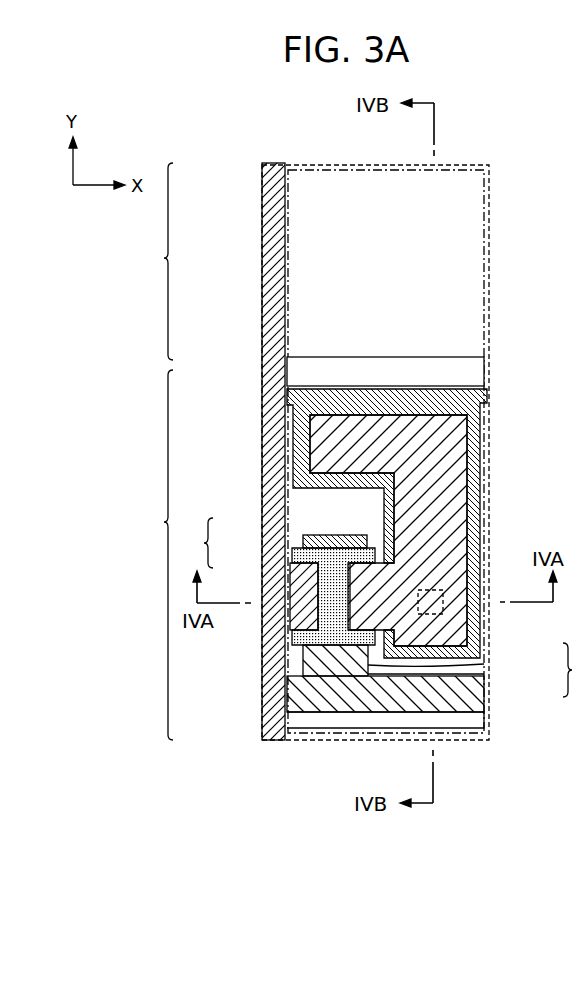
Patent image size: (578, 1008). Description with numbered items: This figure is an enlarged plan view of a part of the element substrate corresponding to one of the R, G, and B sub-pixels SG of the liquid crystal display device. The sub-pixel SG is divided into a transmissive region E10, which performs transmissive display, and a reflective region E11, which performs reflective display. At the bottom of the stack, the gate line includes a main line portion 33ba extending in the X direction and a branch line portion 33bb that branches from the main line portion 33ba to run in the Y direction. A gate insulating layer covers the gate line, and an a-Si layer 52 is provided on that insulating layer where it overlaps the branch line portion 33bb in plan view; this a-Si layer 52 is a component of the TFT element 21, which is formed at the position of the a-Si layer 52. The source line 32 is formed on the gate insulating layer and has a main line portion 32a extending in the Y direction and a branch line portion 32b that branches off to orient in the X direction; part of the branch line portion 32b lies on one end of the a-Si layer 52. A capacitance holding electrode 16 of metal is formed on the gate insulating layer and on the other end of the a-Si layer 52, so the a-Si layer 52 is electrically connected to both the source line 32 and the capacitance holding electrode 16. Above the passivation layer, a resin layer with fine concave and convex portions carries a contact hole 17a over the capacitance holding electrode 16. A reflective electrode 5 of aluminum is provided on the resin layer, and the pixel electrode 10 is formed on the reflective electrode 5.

The pixel electrode 10 is at (326, 163).
The sub-pixel SG is at (477, 163).
The reflective electrode 5 is at (458, 357).
The capacitance holding electrode 16 is at (460, 463).
The a-Si layer 52 is at (370, 545).
The TFT element 21 is at (301, 528).
The source line 32 is at (277, 581).
The main line portion 32a is at (262, 588).
The branch line portion 32b is at (290, 549).
The contact hole 17a is at (443, 614).
The branch line portion 33bb is at (484, 664).
The main line portion 33ba is at (477, 674).
The transmissive region E10 is at (144, 261).
The reflective region E11 is at (144, 555).